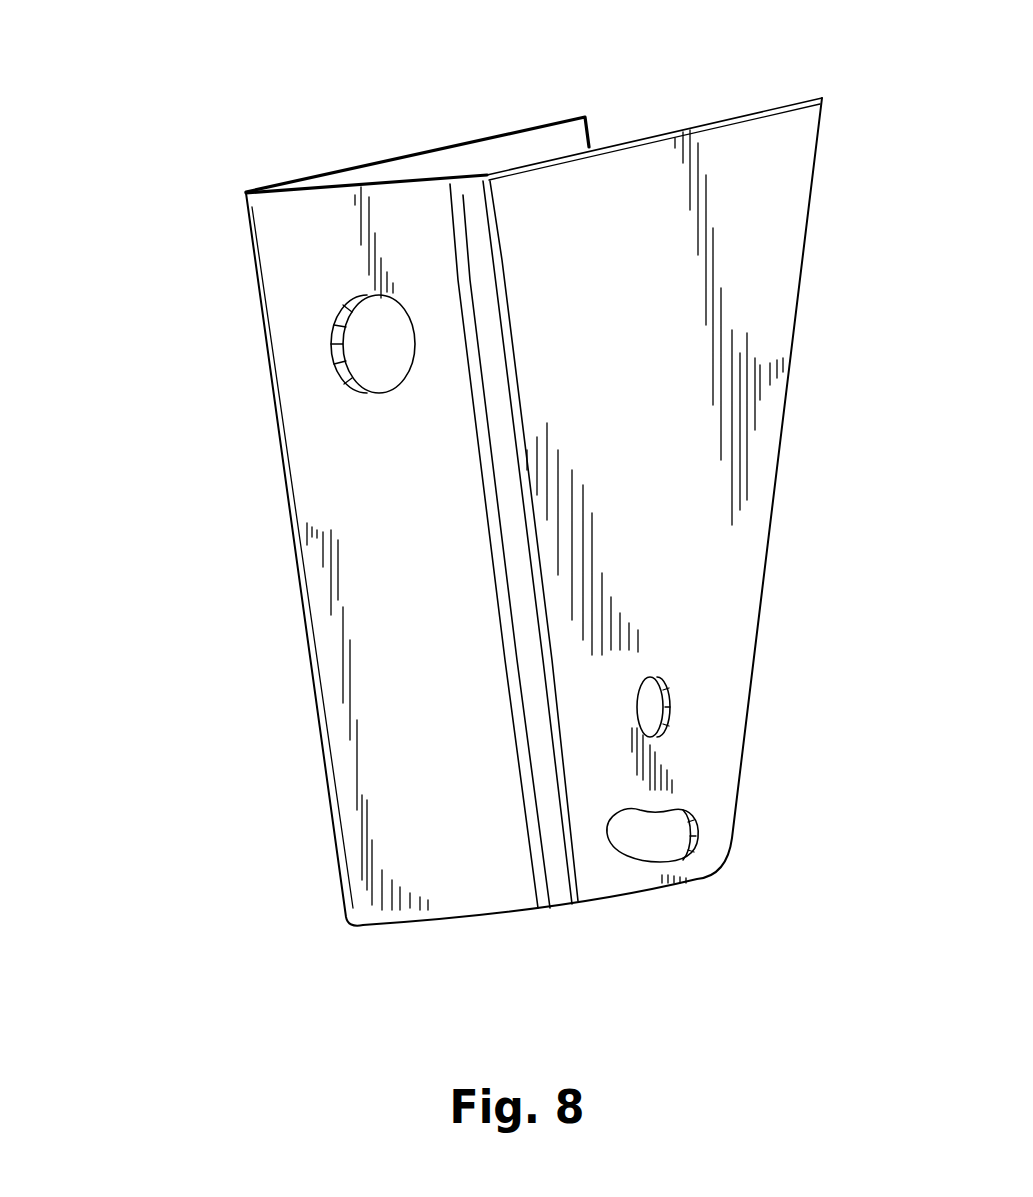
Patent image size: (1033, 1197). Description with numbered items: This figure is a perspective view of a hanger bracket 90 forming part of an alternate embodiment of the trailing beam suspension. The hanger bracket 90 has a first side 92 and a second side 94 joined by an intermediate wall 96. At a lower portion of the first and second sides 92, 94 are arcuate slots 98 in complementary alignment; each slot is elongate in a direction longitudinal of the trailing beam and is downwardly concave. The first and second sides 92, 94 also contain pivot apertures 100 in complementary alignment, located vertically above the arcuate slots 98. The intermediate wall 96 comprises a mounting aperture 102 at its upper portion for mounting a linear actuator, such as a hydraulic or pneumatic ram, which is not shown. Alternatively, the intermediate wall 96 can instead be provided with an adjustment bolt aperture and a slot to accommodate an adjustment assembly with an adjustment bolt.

The hanger bracket 90 is at (257, 276).
The first side 92 is at (767, 347).
The second side 94 is at (542, 125).
The intermediate wall 96 is at (350, 663).
The arcuate slot 98 is at (700, 833).
The pivot aperture 100 is at (672, 698).
The mounting aperture 102 is at (340, 363).